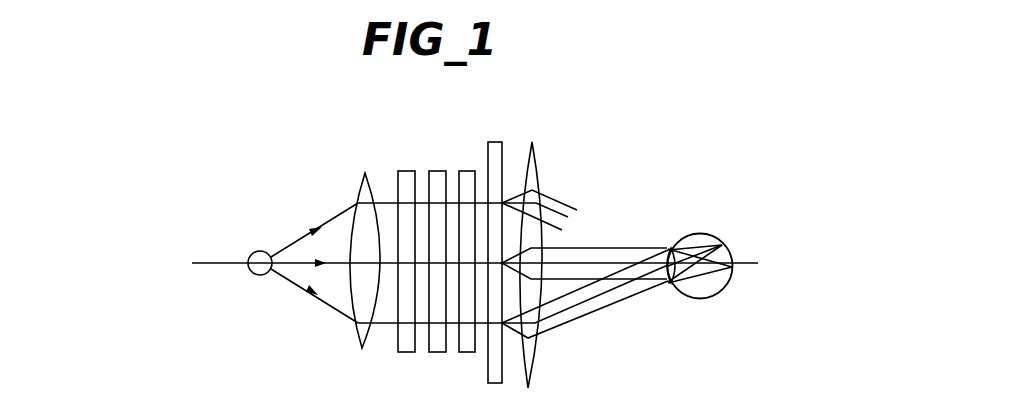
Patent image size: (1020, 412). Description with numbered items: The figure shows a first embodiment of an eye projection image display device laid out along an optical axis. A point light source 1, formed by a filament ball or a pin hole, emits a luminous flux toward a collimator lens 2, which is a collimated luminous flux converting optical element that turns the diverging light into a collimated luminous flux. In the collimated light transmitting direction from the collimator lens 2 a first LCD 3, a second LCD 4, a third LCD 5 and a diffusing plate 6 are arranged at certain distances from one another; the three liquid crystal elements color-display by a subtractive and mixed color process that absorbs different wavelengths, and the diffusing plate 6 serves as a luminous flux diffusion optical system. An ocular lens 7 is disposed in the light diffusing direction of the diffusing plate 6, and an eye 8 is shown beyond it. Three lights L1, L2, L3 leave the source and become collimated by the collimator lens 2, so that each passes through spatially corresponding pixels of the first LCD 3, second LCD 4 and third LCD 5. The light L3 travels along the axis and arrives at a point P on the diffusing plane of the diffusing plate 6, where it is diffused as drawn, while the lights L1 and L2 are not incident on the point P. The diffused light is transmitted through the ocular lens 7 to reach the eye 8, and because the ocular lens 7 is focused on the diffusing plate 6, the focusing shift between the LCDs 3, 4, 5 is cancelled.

The point light source 1 is at (251, 272).
The collimator lens 2 is at (362, 185).
The first LCD 3 is at (400, 171).
The second LCD 4 is at (438, 171).
The third LCD 5 is at (468, 171).
The diffusing plate 6 is at (500, 142).
The ocular lens 7 is at (537, 168).
The eye 8 is at (690, 299).
The point on the diffusing plane P is at (502, 263).
The light L1 is at (386, 225).
The light L2 is at (386, 303).
The light L3 is at (328, 249).